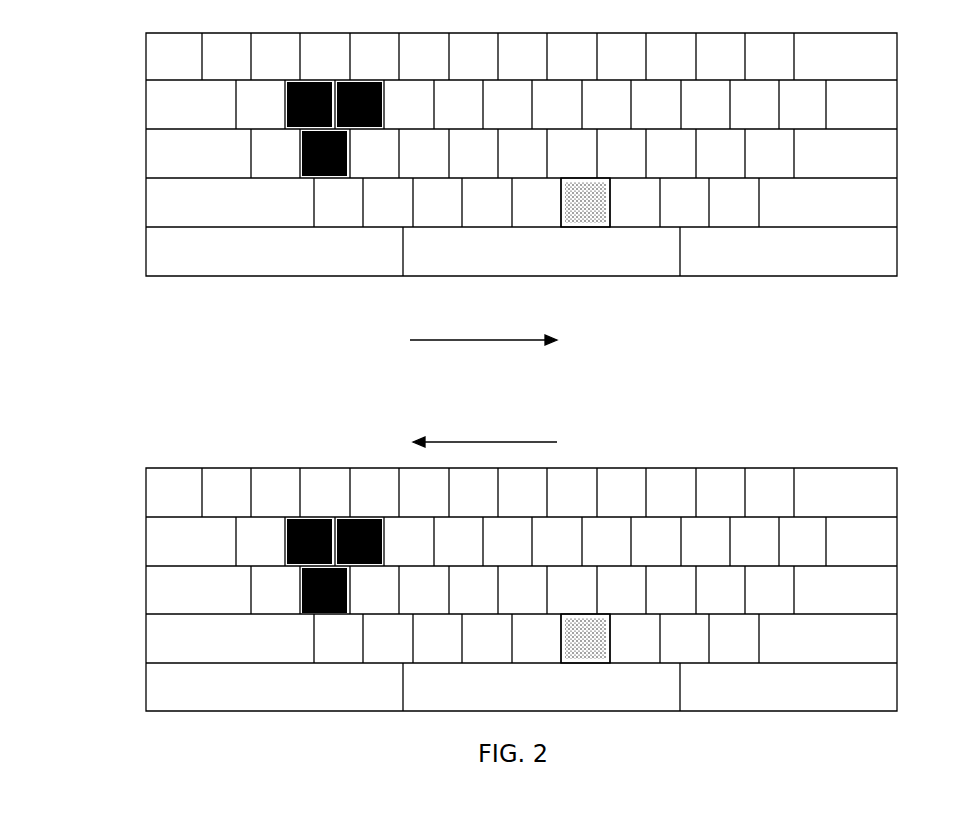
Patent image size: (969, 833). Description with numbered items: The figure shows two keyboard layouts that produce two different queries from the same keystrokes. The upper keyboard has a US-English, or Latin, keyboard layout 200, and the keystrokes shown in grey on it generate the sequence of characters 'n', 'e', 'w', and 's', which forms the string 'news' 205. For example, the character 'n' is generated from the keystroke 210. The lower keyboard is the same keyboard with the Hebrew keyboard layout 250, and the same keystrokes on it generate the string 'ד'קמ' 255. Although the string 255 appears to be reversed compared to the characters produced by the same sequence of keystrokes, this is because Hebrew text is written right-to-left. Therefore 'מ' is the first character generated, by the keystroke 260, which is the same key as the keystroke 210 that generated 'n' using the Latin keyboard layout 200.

The US-English keyboard layout 200 is at (115, 57).
The string 'news' 205 is at (395, 310).
The keystroke 210 is at (600, 218).
The Hebrew keyboard layout 250 is at (118, 488).
The string 'ד'קמ' 255 is at (397, 430).
The keystroke 260 is at (592, 648).